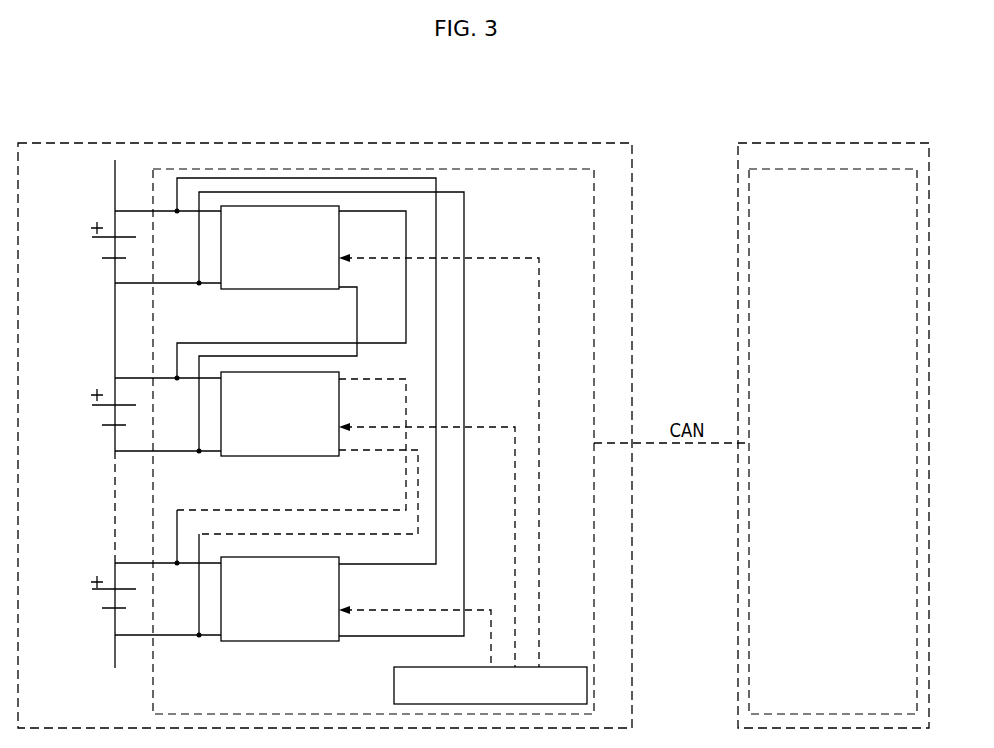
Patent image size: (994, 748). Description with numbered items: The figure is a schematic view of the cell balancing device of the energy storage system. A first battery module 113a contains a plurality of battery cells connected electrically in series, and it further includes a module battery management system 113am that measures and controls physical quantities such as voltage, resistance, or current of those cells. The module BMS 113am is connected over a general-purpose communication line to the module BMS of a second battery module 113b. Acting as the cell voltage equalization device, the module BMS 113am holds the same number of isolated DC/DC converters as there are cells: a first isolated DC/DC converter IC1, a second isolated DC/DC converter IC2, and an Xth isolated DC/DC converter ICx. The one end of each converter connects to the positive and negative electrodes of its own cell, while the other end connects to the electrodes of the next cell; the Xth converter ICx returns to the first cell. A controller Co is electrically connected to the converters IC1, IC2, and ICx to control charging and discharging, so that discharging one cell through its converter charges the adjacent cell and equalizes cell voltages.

The first battery module 113a is at (69, 143).
The module battery management system 113am is at (507, 169).
The second battery module 113b is at (832, 143).
The controller Co is at (567, 667).
The first isolated DC/DC converter IC1 is at (280, 289).
The second isolated DC/DC converter IC2 is at (280, 456).
The Xth isolated DC/DC converter ICx is at (280, 641).